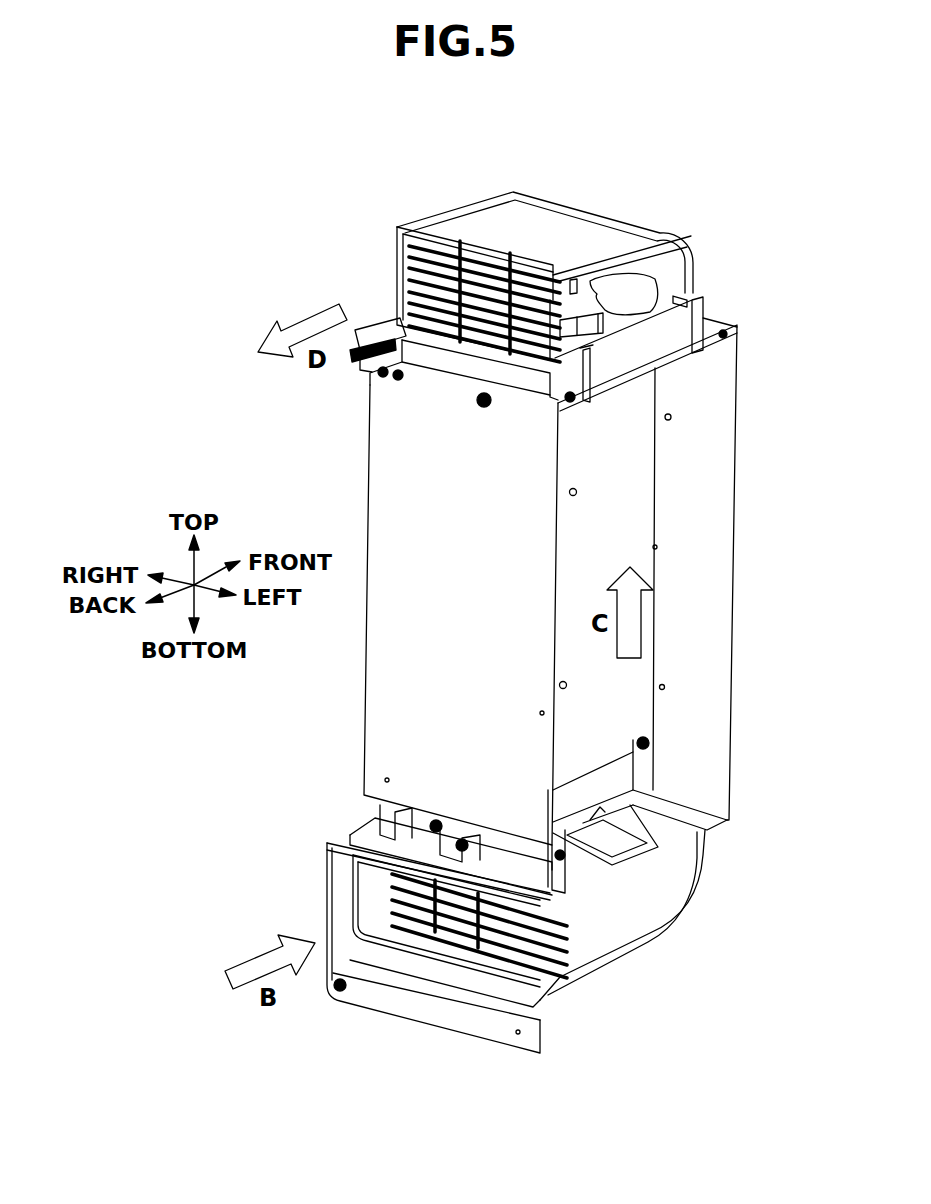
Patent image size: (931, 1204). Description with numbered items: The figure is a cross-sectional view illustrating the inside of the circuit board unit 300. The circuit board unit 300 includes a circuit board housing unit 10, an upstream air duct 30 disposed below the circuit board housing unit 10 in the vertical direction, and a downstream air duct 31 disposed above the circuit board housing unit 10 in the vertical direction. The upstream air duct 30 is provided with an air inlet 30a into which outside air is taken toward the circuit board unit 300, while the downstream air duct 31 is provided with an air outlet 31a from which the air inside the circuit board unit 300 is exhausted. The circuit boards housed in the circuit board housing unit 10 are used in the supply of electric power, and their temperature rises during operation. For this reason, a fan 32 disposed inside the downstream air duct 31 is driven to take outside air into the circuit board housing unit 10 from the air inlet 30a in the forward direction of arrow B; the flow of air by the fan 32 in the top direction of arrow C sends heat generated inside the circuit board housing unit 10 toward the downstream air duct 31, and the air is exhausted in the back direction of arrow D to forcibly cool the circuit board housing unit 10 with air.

The circuit board unit 300 is at (756, 250).
The circuit board housing unit 10 is at (640, 522).
The downstream air duct 31 is at (475, 242).
The air outlet 31a is at (435, 276).
The fan 32 is at (647, 348).
The upstream air duct 30 is at (632, 947).
The air inlet 30a is at (538, 970).